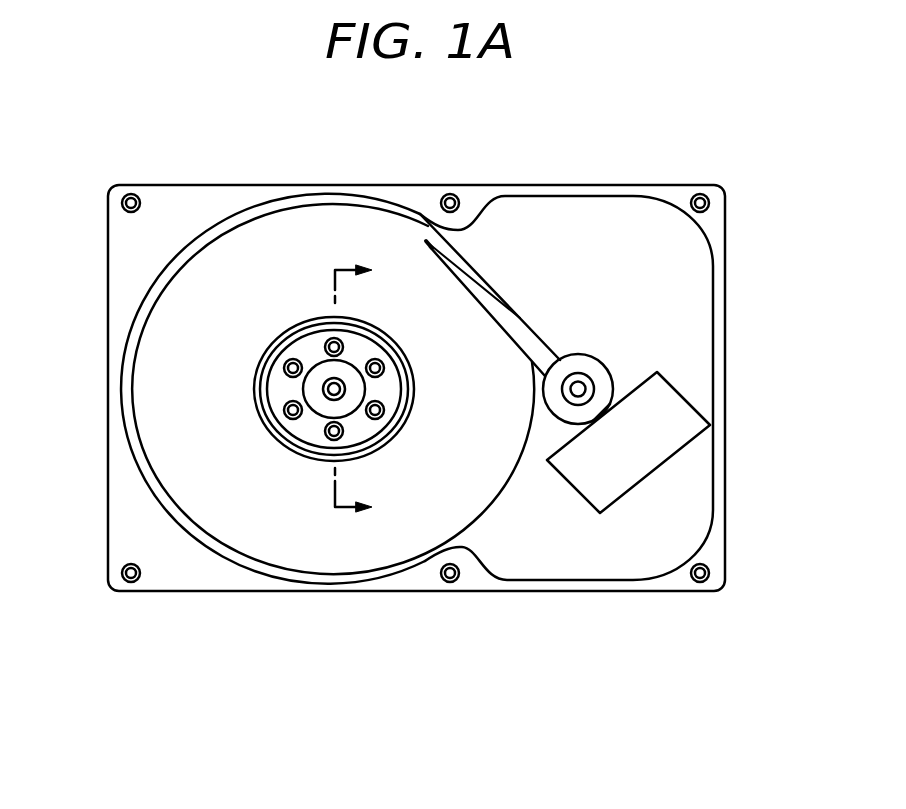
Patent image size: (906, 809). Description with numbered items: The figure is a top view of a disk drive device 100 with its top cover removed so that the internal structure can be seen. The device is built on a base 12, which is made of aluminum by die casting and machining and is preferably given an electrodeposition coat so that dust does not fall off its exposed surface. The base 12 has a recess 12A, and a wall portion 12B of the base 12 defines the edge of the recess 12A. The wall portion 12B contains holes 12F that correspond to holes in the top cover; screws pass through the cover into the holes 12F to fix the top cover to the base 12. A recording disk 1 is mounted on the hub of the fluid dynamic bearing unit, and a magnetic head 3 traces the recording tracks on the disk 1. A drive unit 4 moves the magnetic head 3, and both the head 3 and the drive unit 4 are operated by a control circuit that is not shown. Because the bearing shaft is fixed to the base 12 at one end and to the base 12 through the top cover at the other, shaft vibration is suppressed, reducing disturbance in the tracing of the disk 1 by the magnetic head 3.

The disk drive device 100 is at (624, 174).
The base 12 is at (728, 345).
The recess 12A is at (558, 221).
The wall portion 12B is at (188, 206).
The holes 12F is at (122, 201).
The recording disk 1 is at (330, 243).
The magnetic head 3 is at (428, 241).
The drive unit 4 is at (670, 430).